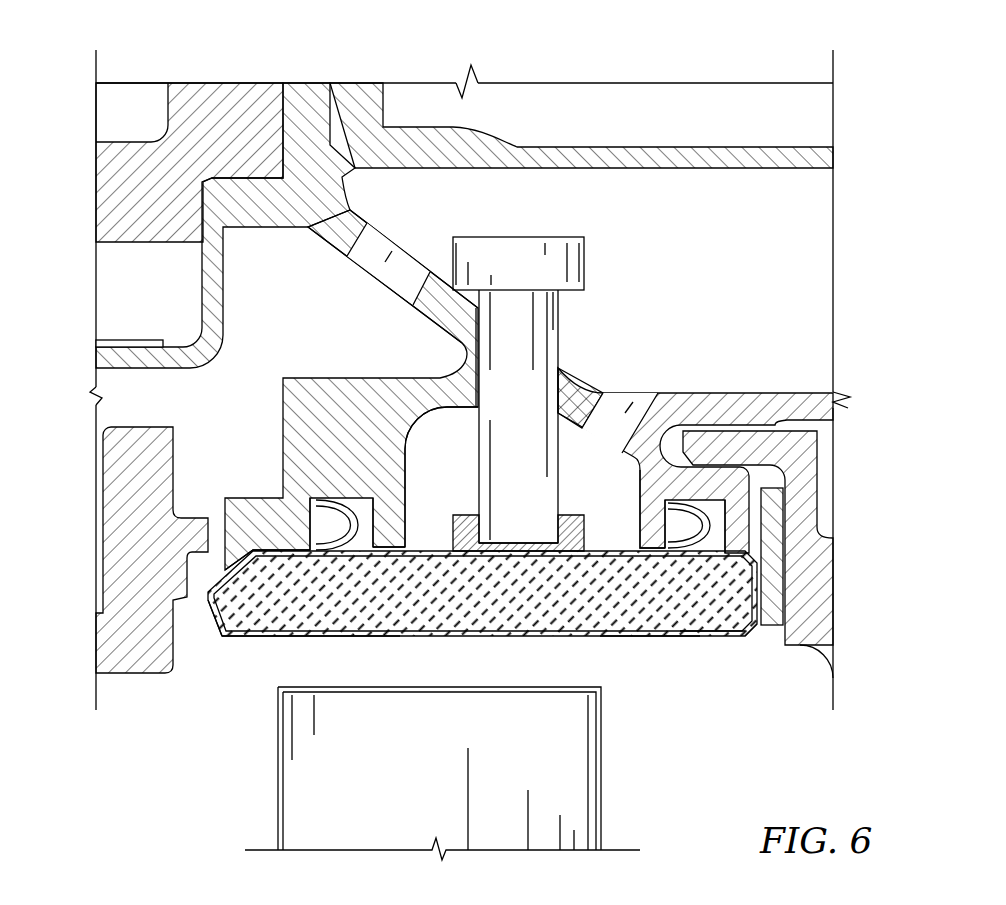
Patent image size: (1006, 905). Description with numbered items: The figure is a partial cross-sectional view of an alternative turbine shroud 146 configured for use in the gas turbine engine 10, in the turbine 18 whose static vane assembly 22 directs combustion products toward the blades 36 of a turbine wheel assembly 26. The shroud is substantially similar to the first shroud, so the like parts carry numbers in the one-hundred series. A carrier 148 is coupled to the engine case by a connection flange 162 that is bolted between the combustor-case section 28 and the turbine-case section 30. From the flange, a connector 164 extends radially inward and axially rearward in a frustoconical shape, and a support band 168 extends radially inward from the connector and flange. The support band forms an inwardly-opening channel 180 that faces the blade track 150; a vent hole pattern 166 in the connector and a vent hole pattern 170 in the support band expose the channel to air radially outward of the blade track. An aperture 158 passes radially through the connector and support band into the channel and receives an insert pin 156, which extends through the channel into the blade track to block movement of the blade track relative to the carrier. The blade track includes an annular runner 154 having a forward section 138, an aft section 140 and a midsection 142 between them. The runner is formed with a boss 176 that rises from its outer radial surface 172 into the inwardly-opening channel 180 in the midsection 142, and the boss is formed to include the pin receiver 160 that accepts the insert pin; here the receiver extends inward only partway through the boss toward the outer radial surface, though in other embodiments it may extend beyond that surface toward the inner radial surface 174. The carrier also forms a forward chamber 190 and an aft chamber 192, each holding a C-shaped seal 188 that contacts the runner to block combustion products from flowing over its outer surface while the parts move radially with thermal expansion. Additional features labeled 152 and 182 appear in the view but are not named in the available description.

The gas turbine engine 10 is at (920, 120).
The turbine 18 is at (842, 119).
The static turbine vane assembly 22 is at (817, 438).
The turbine wheel assembly 26 is at (316, 770).
The combustor-case section 28 is at (168, 113).
The turbine-case section 30 is at (555, 146).
The blade 36 is at (280, 822).
The forward section 138 is at (205, 660).
The aft section 140 is at (739, 641).
The midsection 142 is at (458, 641).
The turbine shroud 146 is at (790, 211).
The carrier 148 is at (657, 390).
The blade track 150 is at (686, 641).
The gap 152 is at (788, 558).
The annular runner 154 is at (650, 633).
The insert pin 156 is at (558, 316).
The aperture 158 is at (488, 358).
The pin receiver 160 is at (488, 513).
The connection flange 162 is at (340, 118).
The connector 164 is at (358, 211).
The vent hole pattern 166 is at (372, 240).
The support band 168 is at (316, 374).
The vent hole pattern 170 is at (595, 410).
The outer radial surface 172 is at (412, 553).
The inner radial surface 174 is at (240, 633).
The boss 176 is at (590, 537).
The inwardly-opening channel 180 is at (420, 455).
The lower edge 182 is at (277, 636).
The seal 188 is at (333, 500).
The forward chamber 190 is at (333, 513).
The aft chamber 192 is at (680, 509).